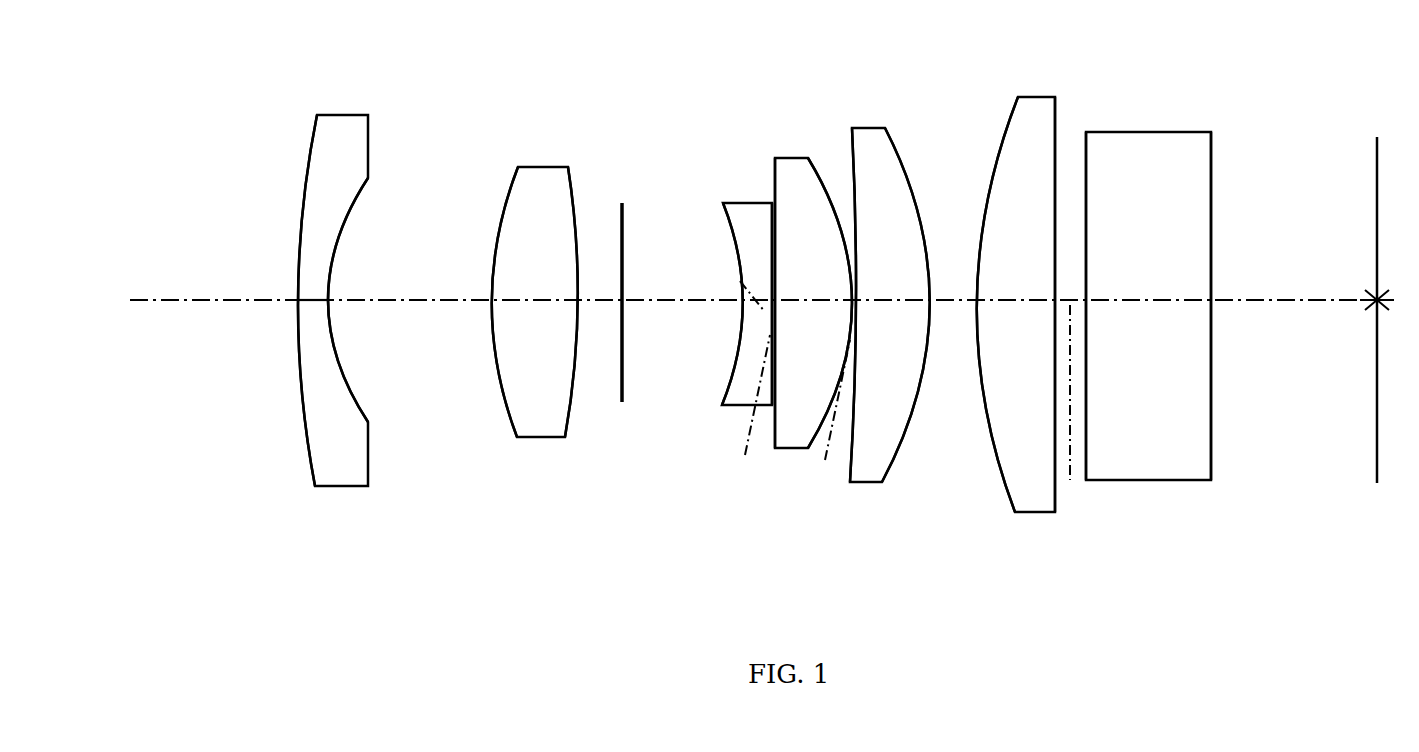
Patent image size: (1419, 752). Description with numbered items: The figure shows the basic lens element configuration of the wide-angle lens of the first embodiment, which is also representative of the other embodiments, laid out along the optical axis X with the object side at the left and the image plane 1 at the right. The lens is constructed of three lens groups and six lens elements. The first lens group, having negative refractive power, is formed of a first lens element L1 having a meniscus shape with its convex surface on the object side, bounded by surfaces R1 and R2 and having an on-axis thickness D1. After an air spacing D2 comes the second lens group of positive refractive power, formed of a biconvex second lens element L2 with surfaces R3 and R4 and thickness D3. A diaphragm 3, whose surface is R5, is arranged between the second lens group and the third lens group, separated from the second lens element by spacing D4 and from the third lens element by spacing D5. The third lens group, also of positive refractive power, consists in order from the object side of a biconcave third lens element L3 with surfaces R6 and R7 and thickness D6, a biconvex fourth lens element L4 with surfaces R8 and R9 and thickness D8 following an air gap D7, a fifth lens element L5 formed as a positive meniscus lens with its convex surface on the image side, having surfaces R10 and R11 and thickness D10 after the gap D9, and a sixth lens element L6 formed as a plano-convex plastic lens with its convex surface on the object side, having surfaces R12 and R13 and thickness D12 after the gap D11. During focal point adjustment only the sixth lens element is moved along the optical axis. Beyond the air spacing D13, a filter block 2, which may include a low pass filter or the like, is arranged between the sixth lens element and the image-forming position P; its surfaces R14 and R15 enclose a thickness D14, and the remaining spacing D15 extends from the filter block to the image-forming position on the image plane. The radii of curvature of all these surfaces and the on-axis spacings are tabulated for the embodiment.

The image plane 1 is at (1377, 137).
The filter block 2 is at (1186, 265).
The diaphragm 3 is at (620, 264).
The image-forming position P is at (1380, 306).
The optical axis X is at (185, 300).
The first lens element L1 is at (339, 248).
The second lens element L2 is at (551, 250).
The third lens element L3 is at (754, 264).
The fourth lens element L4 is at (802, 263).
The fifth lens element L5 is at (899, 263).
The sixth lens element L6 is at (1025, 263).
The lens surface R1 is at (305, 175).
The lens surface R2 is at (340, 238).
The lens surface R3 is at (498, 232).
The lens surface R4 is at (570, 183).
The diaphragm surface R5 is at (622, 208).
The lens surface R6 is at (729, 238).
The lens surface R7 is at (776, 268).
The lens surface R8 is at (776, 185).
The lens surface R9 is at (814, 172).
The lens surface R10 is at (855, 188).
The lens surface R11 is at (900, 157).
The lens surface R12 is at (981, 198).
The lens surface R13 is at (1057, 127).
The filter block surface R14 is at (1087, 206).
The filter block surface R15 is at (1211, 200).
The on-axis surface spacing D1 is at (313, 320).
The on-axis surface spacing D2 is at (420, 324).
The on-axis surface spacing D3 is at (535, 324).
The on-axis surface spacing D4 is at (600, 324).
The on-axis surface spacing D5 is at (687, 324).
The on-axis surface spacing D6 is at (728, 286).
The on-axis surface spacing D7 is at (746, 410).
The on-axis surface spacing D8 is at (813, 324).
The on-axis surface spacing D9 is at (826, 414).
The on-axis surface spacing D10 is at (900, 324).
The on-axis surface spacing D11 is at (955, 324).
The on-axis surface spacing D12 is at (1018, 324).
The on-axis surface spacing D13 is at (1088, 410).
The on-axis surface spacing D14 is at (1150, 324).
The on-axis surface spacing D15 is at (1298, 327).